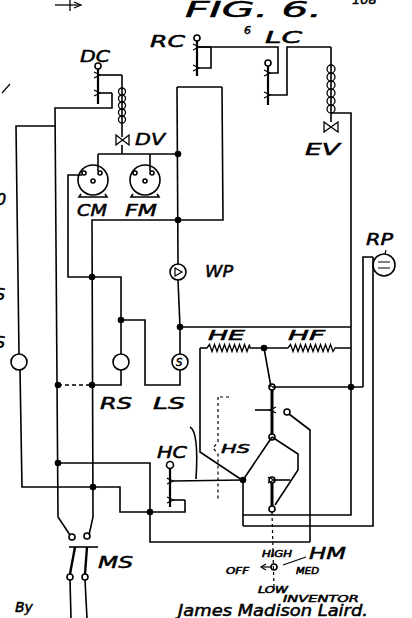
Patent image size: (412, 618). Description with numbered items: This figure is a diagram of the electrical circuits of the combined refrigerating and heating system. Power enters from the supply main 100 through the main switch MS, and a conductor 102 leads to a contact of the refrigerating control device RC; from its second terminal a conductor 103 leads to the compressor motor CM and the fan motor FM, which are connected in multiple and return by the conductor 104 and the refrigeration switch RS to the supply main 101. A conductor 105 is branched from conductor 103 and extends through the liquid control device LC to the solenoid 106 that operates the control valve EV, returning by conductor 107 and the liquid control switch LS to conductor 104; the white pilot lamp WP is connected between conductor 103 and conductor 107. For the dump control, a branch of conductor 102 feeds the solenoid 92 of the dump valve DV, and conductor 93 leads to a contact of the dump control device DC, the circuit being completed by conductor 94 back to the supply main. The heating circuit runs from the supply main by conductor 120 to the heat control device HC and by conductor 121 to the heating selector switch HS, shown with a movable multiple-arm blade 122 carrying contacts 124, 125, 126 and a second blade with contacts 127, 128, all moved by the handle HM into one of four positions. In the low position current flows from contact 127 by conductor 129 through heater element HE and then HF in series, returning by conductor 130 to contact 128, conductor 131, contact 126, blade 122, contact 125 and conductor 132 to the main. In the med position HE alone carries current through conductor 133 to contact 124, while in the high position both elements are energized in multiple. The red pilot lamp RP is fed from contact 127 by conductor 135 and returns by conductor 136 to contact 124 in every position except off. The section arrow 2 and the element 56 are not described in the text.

The section arrow 2 is at (68, 15).
The conductor 56 is at (9, 80).
The solenoid of the dump control valve 92 is at (128, 105).
The conductor 93 is at (124, 85).
The conductor 94 is at (55, 117).
The supply main 100 is at (88, 580).
The supply main 101 is at (67, 579).
The conductor 102 is at (226, 183).
The conductor 103 is at (179, 140).
The conductor 104 is at (68, 247).
The conductor 105 is at (246, 78).
The solenoid 106 is at (336, 89).
The conductor 107 is at (356, 183).
The conductor 120 is at (90, 536).
The conductor 121 is at (198, 449).
The movable multiple-arm blade 122 is at (257, 413).
The contact 124 is at (268, 389).
The contact 125 is at (291, 412).
The contact 126 is at (253, 458).
The contact 127 is at (252, 493).
The contact 128 is at (292, 480).
The conductor 129 is at (201, 372).
The conductor 130 is at (352, 418).
The conductor 131 is at (300, 457).
The conductor 132 is at (230, 527).
The conductor 133 is at (268, 366).
The conductor 135 is at (373, 295).
The conductor 136 is at (362, 277).